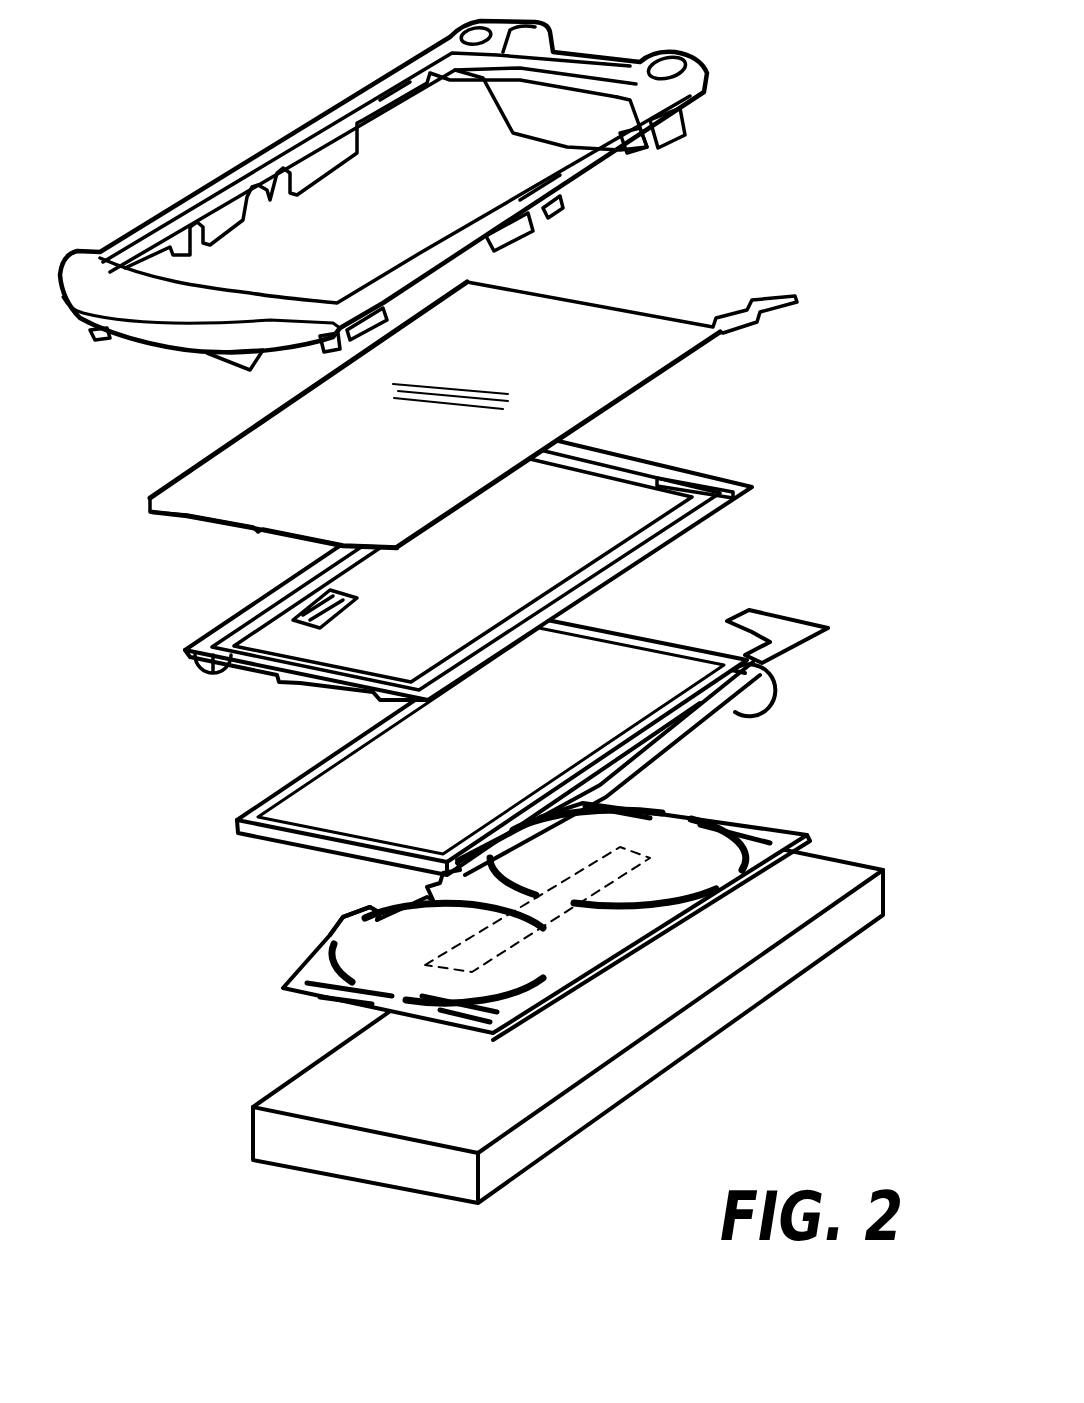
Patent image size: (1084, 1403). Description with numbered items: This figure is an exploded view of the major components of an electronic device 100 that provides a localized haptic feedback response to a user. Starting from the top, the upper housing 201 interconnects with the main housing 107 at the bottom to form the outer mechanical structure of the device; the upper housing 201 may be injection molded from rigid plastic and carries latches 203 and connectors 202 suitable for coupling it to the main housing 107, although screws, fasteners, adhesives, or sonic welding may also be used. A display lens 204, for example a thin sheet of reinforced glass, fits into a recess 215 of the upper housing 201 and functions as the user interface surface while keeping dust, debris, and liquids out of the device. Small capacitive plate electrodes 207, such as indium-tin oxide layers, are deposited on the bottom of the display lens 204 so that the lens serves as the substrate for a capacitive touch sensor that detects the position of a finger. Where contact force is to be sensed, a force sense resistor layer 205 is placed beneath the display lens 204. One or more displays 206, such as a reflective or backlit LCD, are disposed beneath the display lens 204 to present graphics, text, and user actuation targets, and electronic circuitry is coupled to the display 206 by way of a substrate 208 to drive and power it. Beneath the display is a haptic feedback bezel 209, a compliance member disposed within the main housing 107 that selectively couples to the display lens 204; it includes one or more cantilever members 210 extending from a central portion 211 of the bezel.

The electronic device 100 is at (815, 247).
The main housing 107 is at (740, 993).
The upper housing 201 is at (100, 287).
The connectors 202 is at (530, 230).
The latches 203 is at (545, 192).
The display lens 204 is at (243, 478).
The force sense resistor layer 205 is at (633, 477).
The display 206 is at (395, 810).
The capacitive plate electrodes 207 is at (437, 406).
The substrate 208 is at (790, 633).
The haptic feedback bezel 209 is at (673, 823).
The cantilever members 210 is at (386, 928).
The central portion 211 is at (452, 972).
The recess 215 is at (388, 62).